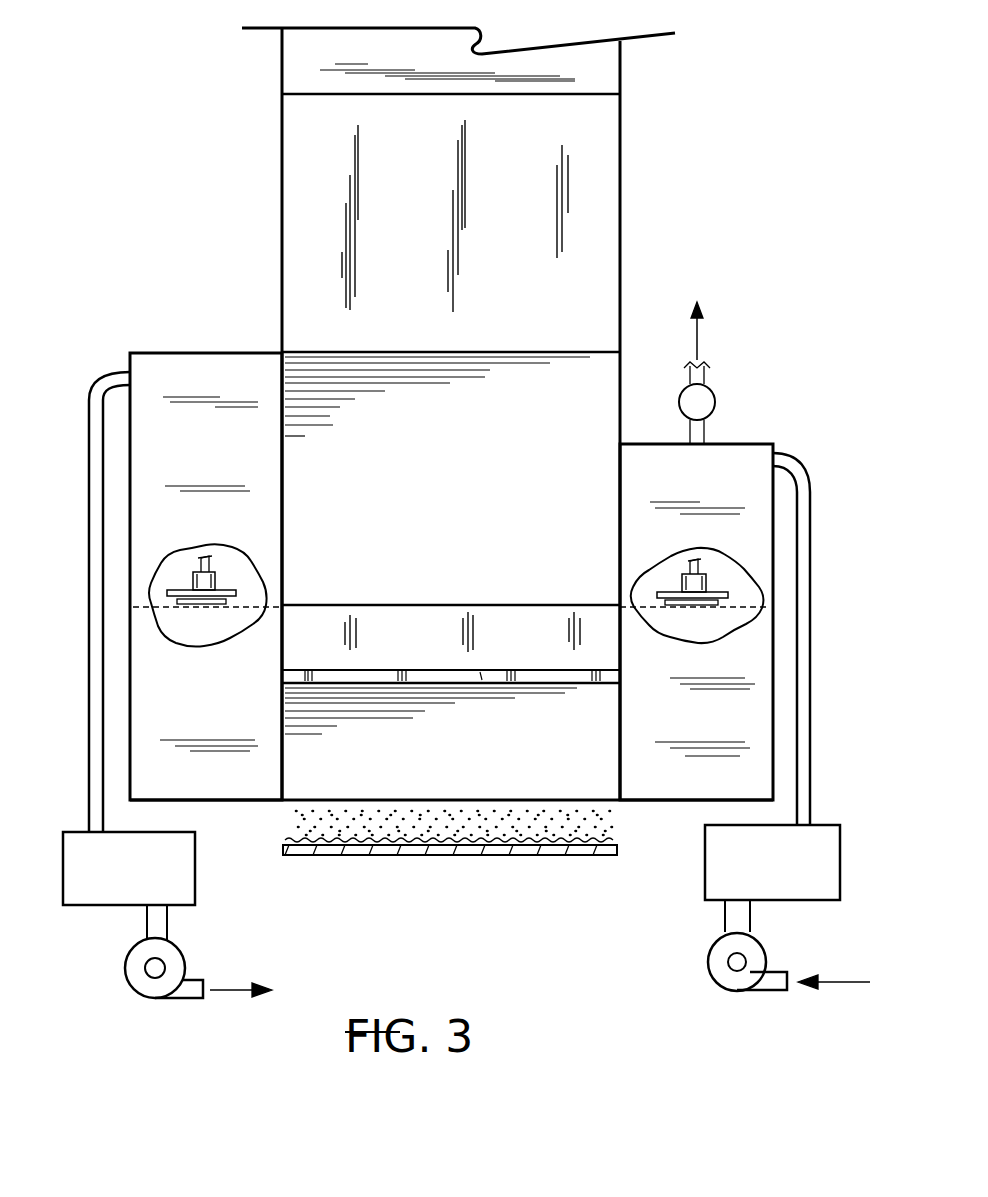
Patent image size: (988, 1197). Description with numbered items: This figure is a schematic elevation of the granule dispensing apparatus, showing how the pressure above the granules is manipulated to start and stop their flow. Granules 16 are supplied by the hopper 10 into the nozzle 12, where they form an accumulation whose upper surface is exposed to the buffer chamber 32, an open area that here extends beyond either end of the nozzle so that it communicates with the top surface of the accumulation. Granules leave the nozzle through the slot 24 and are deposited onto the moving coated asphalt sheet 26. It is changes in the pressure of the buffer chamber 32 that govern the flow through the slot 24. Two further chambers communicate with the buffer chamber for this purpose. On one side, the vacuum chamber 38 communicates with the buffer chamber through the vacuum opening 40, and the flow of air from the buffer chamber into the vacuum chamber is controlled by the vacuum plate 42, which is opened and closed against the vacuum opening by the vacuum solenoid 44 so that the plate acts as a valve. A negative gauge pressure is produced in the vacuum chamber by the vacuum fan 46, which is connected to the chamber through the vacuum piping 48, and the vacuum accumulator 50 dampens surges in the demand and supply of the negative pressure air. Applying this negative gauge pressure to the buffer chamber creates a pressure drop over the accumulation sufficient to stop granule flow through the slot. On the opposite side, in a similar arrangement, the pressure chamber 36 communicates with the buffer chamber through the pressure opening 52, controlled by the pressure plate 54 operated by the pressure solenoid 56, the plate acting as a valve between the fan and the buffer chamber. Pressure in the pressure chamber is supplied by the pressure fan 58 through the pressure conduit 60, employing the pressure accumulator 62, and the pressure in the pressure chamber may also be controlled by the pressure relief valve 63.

The hopper 10 is at (282, 395).
The nozzle 12 is at (620, 770).
The granules 16 is at (605, 810).
The slot 24 is at (282, 800).
The moving coated asphalt sheet 26 is at (568, 856).
The buffer chamber 32 is at (232, 692).
The pressure chamber 36 is at (740, 444).
The vacuum chamber 38 is at (160, 353).
The vacuum opening 40 is at (232, 615).
The vacuum plate 42 is at (236, 592).
The vacuum solenoid 44 is at (215, 572).
The vacuum fan 46 is at (185, 978).
The vacuum piping 48 is at (78, 800).
The vacuum accumulator 50 is at (195, 860).
The pressure opening 52 is at (745, 627).
The pressure plate 54 is at (665, 575).
The pressure solenoid 56 is at (707, 580).
The pressure fan 58 is at (710, 976).
The pressure conduit 60 is at (812, 487).
The pressure accumulator 62 is at (810, 900).
The pressure relief valve 63 is at (706, 382).